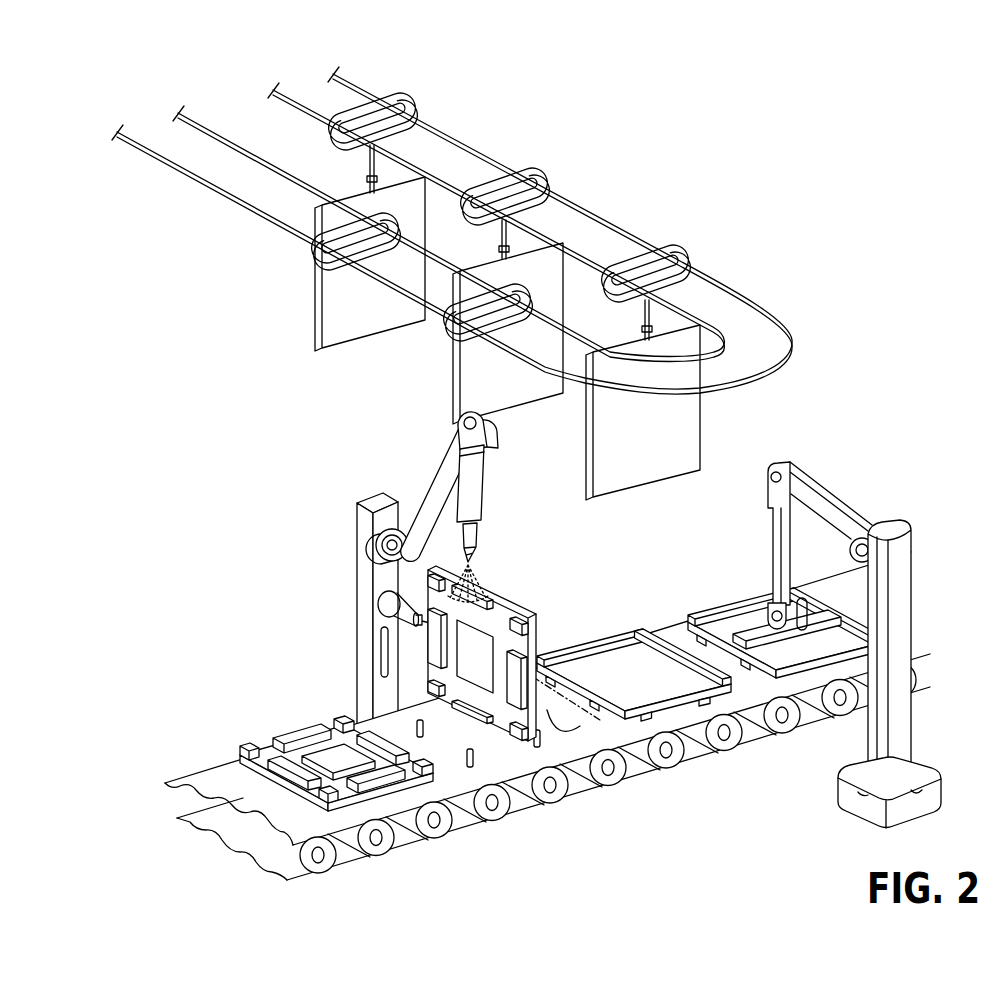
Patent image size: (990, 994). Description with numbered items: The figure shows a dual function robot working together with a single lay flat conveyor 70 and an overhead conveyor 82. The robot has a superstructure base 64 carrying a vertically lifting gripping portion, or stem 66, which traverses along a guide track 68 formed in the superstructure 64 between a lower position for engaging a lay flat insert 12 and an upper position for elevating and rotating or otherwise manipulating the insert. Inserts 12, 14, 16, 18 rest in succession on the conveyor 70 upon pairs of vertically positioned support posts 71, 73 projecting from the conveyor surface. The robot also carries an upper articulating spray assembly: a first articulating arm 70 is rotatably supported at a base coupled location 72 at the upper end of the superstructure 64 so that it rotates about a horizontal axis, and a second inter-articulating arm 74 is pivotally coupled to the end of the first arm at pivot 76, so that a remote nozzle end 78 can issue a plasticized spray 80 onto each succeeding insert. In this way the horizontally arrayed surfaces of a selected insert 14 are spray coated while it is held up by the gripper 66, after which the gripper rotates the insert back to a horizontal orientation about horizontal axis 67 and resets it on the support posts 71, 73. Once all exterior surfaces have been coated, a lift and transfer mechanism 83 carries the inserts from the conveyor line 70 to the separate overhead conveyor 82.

The lay flat insert 12 is at (292, 745).
The insert 14 is at (530, 605).
The insert 16 is at (622, 636).
The insert 18 is at (722, 610).
The superstructure base 64 is at (357, 566).
The stem 66 is at (402, 615).
The horizontal axis 67 is at (583, 682).
The guide track 68 is at (384, 646).
The first articulating arm 70 is at (432, 500).
The support posts 71 is at (417, 730).
The base coupled location 72 is at (385, 543).
The support posts 73 is at (538, 748).
The second inter-articulating arm 74 is at (482, 496).
The pivot 76 is at (463, 418).
The remote nozzle end 78 is at (477, 530).
The plasticized spray 80 is at (480, 578).
The overhead conveyor 82 is at (633, 200).
The lift and transfer mechanism 83 is at (925, 574).